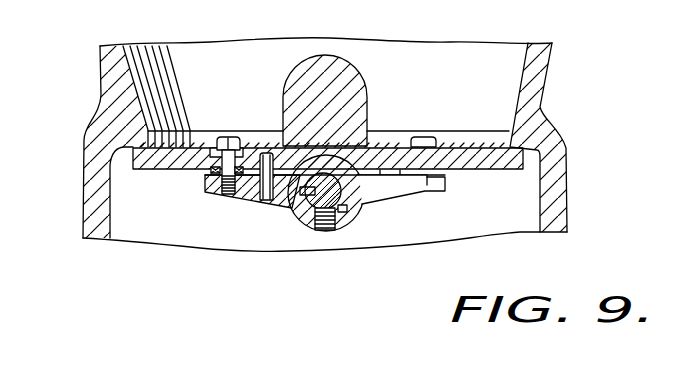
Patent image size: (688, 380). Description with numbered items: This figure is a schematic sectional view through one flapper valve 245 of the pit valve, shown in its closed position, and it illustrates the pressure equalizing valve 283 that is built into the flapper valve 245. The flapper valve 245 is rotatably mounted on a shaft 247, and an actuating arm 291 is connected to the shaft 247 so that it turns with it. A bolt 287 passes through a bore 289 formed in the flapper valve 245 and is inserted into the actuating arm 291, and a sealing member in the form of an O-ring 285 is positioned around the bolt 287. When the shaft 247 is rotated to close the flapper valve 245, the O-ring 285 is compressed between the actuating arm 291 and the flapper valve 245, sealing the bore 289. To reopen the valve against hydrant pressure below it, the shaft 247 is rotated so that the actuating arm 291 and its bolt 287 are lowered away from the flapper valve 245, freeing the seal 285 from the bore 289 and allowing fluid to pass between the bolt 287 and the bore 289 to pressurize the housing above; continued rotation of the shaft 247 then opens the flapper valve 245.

The flapper valve 245 is at (116, 165).
The shaft 247 is at (338, 208).
The pressure equalizing valve 283 is at (198, 199).
The O-ring 285 is at (238, 186).
The bolt 287 is at (230, 137).
The bore 289 is at (207, 168).
The actuating arm 291 is at (215, 197).